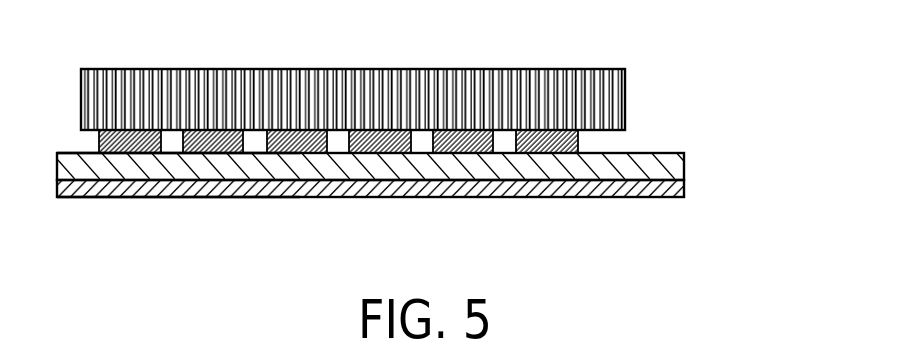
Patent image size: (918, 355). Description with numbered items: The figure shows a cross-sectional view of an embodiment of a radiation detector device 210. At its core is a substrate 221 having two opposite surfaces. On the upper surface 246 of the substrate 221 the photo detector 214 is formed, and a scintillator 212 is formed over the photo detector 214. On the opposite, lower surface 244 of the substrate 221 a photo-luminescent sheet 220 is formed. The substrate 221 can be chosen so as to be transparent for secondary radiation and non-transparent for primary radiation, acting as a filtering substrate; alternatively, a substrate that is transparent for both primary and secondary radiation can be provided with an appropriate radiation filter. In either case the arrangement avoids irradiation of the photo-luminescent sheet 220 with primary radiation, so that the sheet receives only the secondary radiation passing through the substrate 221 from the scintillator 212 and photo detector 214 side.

The radiation detector device 210 is at (446, 111).
The scintillator 212 is at (617, 98).
The photo detector 214 is at (612, 143).
The photo-luminescent sheet 220 is at (679, 183).
The substrate 221 is at (679, 157).
The surface of the substrate 244 is at (98, 182).
The surface of the substrate 246 is at (67, 152).